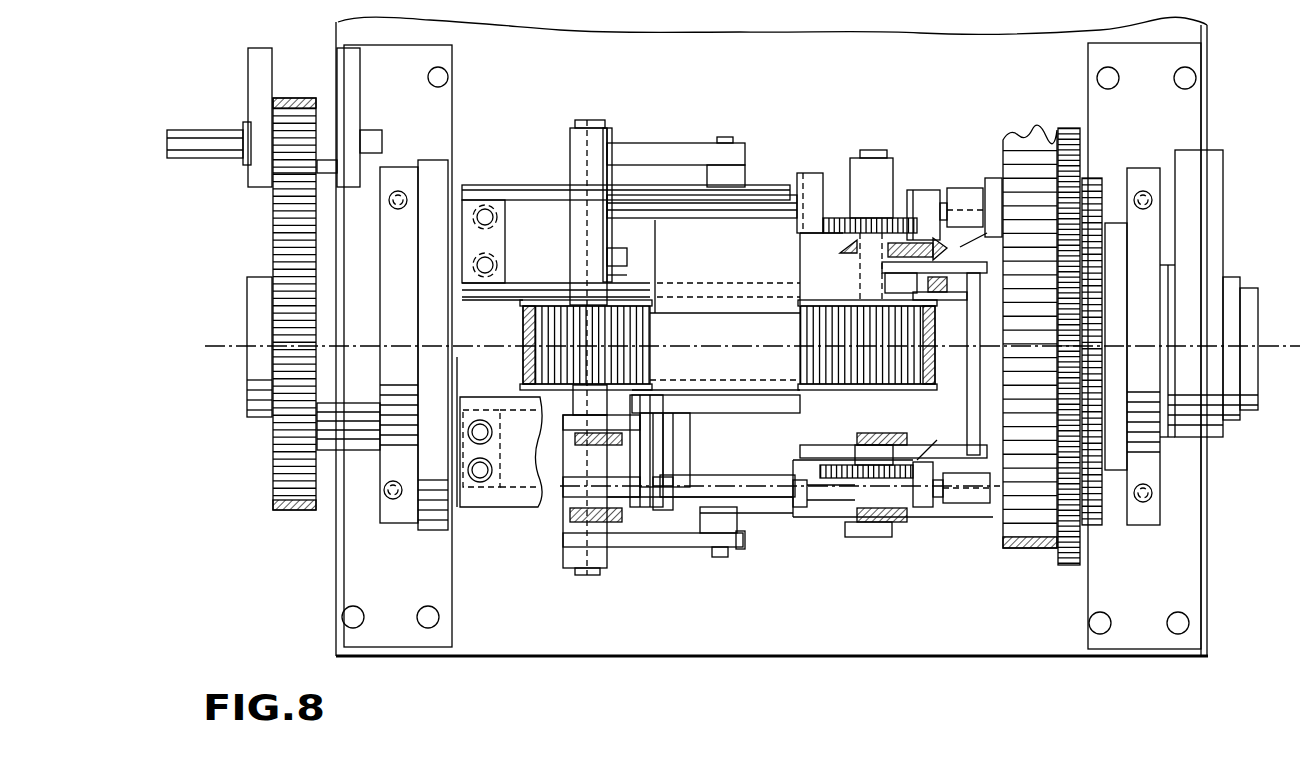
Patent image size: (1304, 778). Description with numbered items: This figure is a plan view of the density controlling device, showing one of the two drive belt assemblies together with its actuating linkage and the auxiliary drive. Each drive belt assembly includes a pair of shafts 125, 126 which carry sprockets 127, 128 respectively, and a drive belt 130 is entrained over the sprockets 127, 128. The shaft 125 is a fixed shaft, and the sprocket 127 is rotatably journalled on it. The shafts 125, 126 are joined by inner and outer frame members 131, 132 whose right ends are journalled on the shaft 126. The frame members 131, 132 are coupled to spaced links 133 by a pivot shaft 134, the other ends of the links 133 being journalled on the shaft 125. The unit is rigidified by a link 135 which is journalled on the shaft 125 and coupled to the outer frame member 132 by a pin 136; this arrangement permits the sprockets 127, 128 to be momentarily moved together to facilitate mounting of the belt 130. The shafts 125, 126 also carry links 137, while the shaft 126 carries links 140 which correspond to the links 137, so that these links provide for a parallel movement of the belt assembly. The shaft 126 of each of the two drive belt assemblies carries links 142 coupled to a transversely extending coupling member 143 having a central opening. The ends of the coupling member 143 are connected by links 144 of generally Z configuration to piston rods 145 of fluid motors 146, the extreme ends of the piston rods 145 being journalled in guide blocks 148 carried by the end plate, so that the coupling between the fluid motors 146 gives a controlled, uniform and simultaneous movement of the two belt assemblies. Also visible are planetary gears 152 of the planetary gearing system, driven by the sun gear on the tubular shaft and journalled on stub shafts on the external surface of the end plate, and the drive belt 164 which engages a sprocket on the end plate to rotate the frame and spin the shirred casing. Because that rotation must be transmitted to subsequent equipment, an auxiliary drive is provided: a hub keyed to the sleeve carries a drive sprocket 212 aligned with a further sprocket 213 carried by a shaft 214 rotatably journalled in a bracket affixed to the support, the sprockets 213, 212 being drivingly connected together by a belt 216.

The shaft 125 is at (577, 577).
The shaft 126 is at (870, 540).
The sprocket 127 is at (522, 307).
The sprocket 128 is at (832, 353).
The drive belt 130 is at (725, 300).
The inner frame member 131 is at (727, 400).
The outer frame member 132 is at (773, 512).
The links 133 is at (680, 428).
The pivot shaft 134 is at (636, 512).
The link 135 is at (680, 545).
The pin 136 is at (723, 560).
The links 137 is at (577, 503).
The links 140 is at (733, 447).
The links 142 is at (855, 272).
The coupling member 143 is at (968, 375).
The links 144 is at (917, 188).
The piston rods 145 is at (832, 190).
The fluid motors 146 is at (758, 212).
The guide blocks 148 is at (962, 190).
The planetary gears 152 is at (1067, 128).
The drive belt 164 is at (1008, 128).
The drive sprocket 212 is at (287, 440).
The sprocket 213 is at (292, 177).
The shaft 214 is at (207, 150).
The belt 216 is at (288, 512).